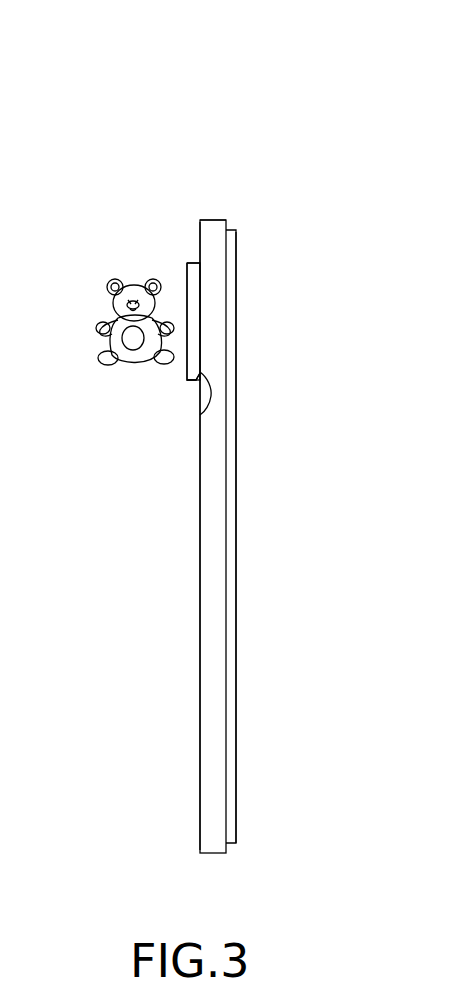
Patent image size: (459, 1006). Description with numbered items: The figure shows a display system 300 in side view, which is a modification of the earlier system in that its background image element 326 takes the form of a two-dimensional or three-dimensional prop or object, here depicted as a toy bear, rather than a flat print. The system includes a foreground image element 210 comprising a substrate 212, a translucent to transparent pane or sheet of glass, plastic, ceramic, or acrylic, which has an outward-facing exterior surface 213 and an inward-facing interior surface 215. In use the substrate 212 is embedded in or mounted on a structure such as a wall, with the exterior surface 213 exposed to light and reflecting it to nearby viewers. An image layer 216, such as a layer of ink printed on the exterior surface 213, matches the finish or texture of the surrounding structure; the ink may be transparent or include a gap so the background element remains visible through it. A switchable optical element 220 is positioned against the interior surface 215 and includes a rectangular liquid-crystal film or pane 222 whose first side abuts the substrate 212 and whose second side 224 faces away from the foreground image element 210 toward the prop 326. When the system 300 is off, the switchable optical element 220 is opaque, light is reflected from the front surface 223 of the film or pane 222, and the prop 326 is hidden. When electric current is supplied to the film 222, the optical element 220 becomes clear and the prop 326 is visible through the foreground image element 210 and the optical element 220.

The display system 300 is at (255, 92).
The foreground image element 210 is at (225, 205).
The substrate 212 is at (207, 220).
The exterior surface 213 is at (232, 230).
The interior surface 215 is at (198, 228).
The image layer 216 is at (236, 318).
The switchable optical element 220 is at (183, 407).
The film or pane 222 is at (190, 263).
The front surface 223 is at (204, 417).
The second side 224 is at (191, 382).
The background image element 326 is at (100, 272).